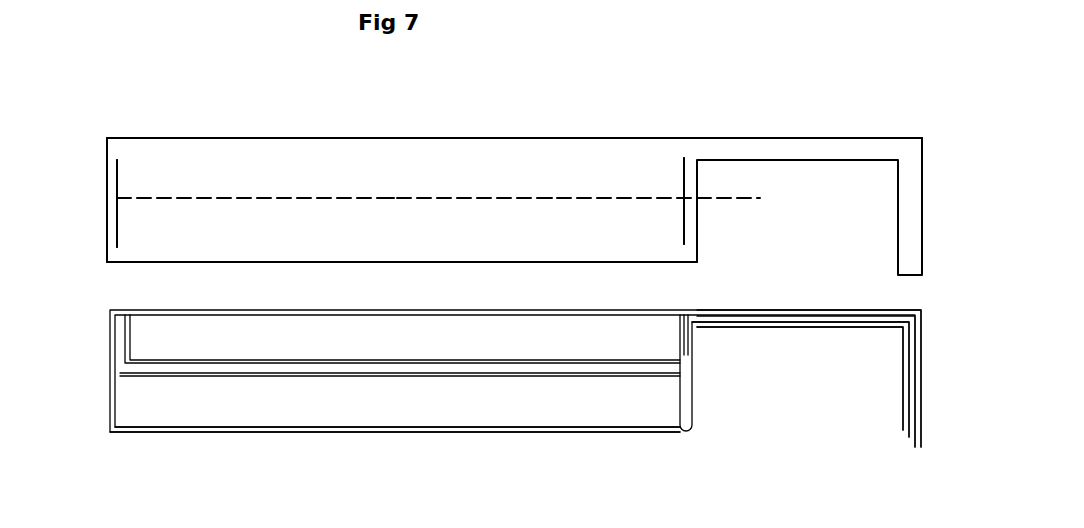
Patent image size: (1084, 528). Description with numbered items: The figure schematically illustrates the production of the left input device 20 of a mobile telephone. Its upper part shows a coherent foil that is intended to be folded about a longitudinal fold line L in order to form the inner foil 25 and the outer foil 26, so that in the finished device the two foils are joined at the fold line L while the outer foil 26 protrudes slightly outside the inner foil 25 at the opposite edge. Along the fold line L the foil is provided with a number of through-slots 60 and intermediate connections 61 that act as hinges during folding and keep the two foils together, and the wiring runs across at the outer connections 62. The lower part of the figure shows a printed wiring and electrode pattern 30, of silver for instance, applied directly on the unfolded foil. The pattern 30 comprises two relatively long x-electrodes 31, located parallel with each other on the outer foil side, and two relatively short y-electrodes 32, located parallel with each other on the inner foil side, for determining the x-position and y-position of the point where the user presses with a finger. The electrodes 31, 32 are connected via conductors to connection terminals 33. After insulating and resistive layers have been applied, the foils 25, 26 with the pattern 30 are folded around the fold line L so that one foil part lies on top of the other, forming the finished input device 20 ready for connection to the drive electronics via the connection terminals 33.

The left input device 20 is at (627, 117).
The inner foil 25 is at (507, 148).
The outer foil 26 is at (530, 253).
The through-slots 60 is at (163, 198).
The intermediate connections 61 is at (248, 197).
The outer connections 62 is at (112, 198).
The fold line L is at (733, 200).
The printed wiring and electrode pattern 30 is at (681, 450).
The x-electrodes 31 is at (494, 374).
The y-electrodes 32 is at (130, 338).
The connection terminals 33 is at (905, 447).